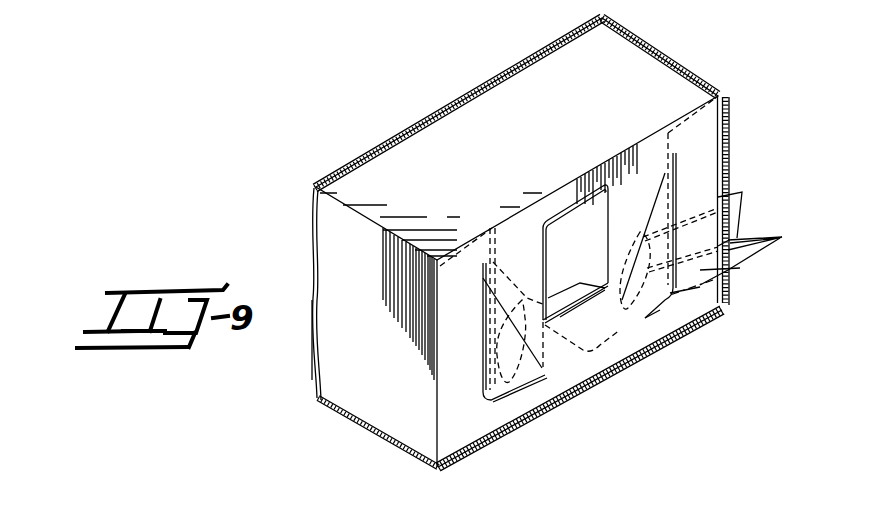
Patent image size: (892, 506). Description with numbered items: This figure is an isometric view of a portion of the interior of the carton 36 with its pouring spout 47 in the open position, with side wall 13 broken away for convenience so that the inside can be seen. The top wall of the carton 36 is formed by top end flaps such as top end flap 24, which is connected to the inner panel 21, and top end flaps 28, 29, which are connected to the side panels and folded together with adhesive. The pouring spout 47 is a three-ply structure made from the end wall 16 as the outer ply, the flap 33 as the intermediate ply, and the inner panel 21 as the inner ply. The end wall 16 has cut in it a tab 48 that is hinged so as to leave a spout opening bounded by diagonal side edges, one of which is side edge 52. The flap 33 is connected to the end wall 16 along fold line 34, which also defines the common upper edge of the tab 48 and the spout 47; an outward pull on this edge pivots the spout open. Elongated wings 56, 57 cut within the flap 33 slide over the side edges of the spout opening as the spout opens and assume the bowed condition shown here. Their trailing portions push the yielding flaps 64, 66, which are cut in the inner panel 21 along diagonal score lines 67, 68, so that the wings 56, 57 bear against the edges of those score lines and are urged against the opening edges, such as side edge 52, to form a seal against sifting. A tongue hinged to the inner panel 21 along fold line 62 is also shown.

The side wall 13 is at (364, 279).
The end wall 16 is at (731, 127).
The inner panel 21 is at (719, 158).
The top end flap 24 is at (568, 101).
The top end flap 28 is at (493, 90).
The top end flap 29 is at (452, 104).
The flap 33 is at (730, 140).
The fold line 34 is at (727, 88).
The carton 36 is at (316, 380).
The pouring spout 47 is at (743, 266).
The tab 48 is at (752, 248).
The side edge 52 is at (505, 276).
The wing 56 is at (648, 234).
The wing 57 is at (557, 330).
The fold line 62 is at (553, 342).
The flap 64 is at (668, 326).
The flap 66 is at (487, 397).
The score line 67 is at (677, 195).
The score line 68 is at (525, 298).